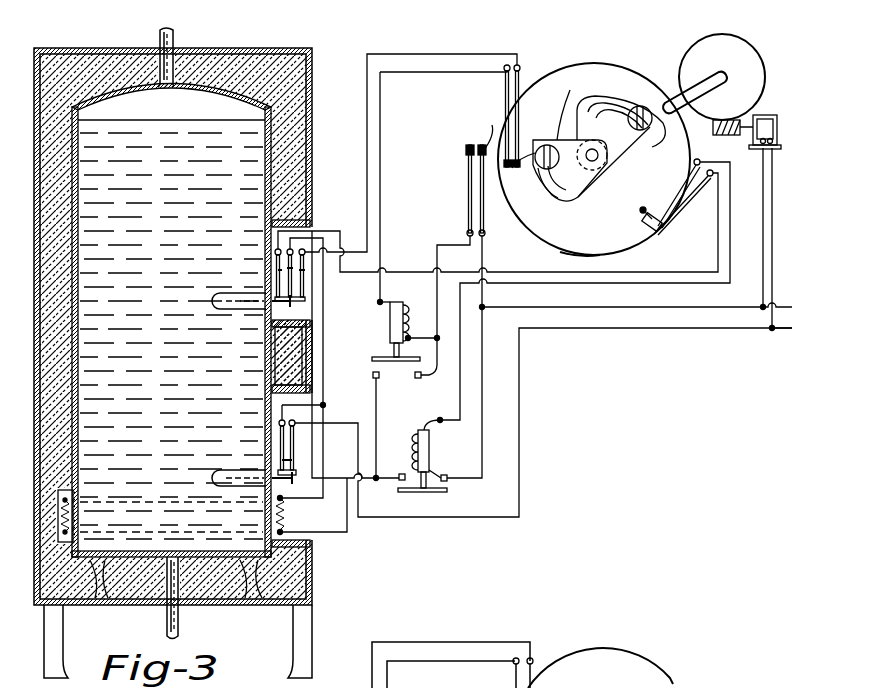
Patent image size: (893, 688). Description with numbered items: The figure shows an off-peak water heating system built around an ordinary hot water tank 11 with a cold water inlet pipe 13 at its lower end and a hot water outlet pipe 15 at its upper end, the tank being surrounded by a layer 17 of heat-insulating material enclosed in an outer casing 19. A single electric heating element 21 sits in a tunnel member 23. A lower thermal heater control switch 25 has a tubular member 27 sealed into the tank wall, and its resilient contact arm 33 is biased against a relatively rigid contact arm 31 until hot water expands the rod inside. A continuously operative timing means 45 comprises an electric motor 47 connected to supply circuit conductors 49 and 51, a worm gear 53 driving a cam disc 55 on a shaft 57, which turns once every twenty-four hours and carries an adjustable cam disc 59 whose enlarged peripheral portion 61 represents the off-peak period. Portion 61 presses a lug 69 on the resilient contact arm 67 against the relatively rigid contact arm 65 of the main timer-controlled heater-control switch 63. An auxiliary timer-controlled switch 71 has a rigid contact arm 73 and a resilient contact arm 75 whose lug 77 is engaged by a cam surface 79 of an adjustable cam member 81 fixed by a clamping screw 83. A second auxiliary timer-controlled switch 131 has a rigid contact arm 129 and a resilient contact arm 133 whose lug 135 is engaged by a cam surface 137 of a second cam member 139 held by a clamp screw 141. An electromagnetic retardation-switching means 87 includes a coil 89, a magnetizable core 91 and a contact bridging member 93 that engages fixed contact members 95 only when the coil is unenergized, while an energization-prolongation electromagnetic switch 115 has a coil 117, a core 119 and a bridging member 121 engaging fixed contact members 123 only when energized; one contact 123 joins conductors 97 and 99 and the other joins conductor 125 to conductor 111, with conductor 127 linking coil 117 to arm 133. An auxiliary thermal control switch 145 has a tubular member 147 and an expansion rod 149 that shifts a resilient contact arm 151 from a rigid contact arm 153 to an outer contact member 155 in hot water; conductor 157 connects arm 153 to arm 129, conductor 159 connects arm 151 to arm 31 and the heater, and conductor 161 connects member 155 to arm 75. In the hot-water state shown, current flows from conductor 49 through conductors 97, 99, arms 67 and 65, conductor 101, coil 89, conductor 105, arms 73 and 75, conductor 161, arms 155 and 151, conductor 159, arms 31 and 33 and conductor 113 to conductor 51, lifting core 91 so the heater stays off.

The hot water tank 11 is at (264, 188).
The cold water inlet pipe 13 is at (183, 629).
The hot water outlet pipe 15 is at (172, 46).
The layer of heat-insulating material 17 is at (302, 151).
The outer casing 19 is at (306, 126).
The electric heating element 21 is at (300, 530).
The tunnel member 23 is at (80, 470).
The lower thermal heater control switch 25 is at (218, 469).
The tubular member 27 is at (232, 490).
The relatively rigid contact arm 31 is at (278, 446).
The resilient contact arm 33 is at (300, 434).
The continuously operative timing means 45 is at (641, 45).
The electric motor 47 is at (774, 113).
The supply circuit conductor 49 is at (783, 298).
The supply circuit conductor 51 is at (783, 333).
The worm gear 53 is at (733, 138).
The cam disc 55 is at (753, 52).
The shaft 57 is at (673, 90).
The cam disc 59 is at (566, 58).
The portion of greater outer radius 61 is at (571, 254).
The main timer-controlled heater-control switch 63 is at (446, 138).
The relatively rigid contact arm 65 is at (468, 196).
The resilient contact arm 67 is at (487, 228).
The lug 69 is at (491, 130).
The auxiliary timer-controlled switch 71 is at (503, 186).
The relatively rigid contact arm 73 is at (504, 90).
The resilient contact arm 75 is at (520, 150).
The lug 77 is at (543, 144).
The cam surface 79 is at (534, 193).
The adjustable cam member 81 is at (583, 185).
The clamping screw 83 is at (559, 112).
The electromagnetic retardation-switching means 87 is at (400, 298).
The coil 89 is at (408, 322).
The magnetizable core 91 is at (405, 342).
The contact bridging member 93 is at (398, 357).
The fixed contact members 95 is at (380, 378).
The conductor 97 is at (646, 306).
The conductor 99 is at (484, 256).
The conductor 101 is at (457, 252).
The conductor 105 is at (437, 72).
The conductor 111 is at (379, 412).
The conductor 113 is at (358, 426).
The energization-prolongation electromagnetic switch 115 is at (440, 445).
The coil 117 is at (413, 437).
The magnetizable core 119 is at (435, 466).
The contact bridging member 121 is at (426, 493).
The fixed contact members 123 is at (400, 482).
The conductor 125 is at (404, 473).
The conductor 127 is at (733, 248).
The relatively rigid contact arm 129 is at (683, 207).
The second auxiliary timer-controlled switch 131 is at (661, 255).
The resilient contact arm 133 is at (668, 189).
The lug 135 is at (640, 210).
The cam surface 137 is at (602, 72).
The second cam member 139 is at (600, 162).
The clamp screw 141 is at (645, 133).
The auxiliary thermal control switch 145 is at (214, 286).
The tubular member 147 is at (232, 299).
The expansion rod 149 is at (263, 322).
The resilient contact arm 151 is at (305, 270).
The relatively rigid contact arm 153 is at (276, 252).
The outer relatively rigid contact member 155 is at (305, 290).
The conductor 157 is at (315, 230).
The conductor 159 is at (315, 368).
The conductor 161 is at (367, 102).